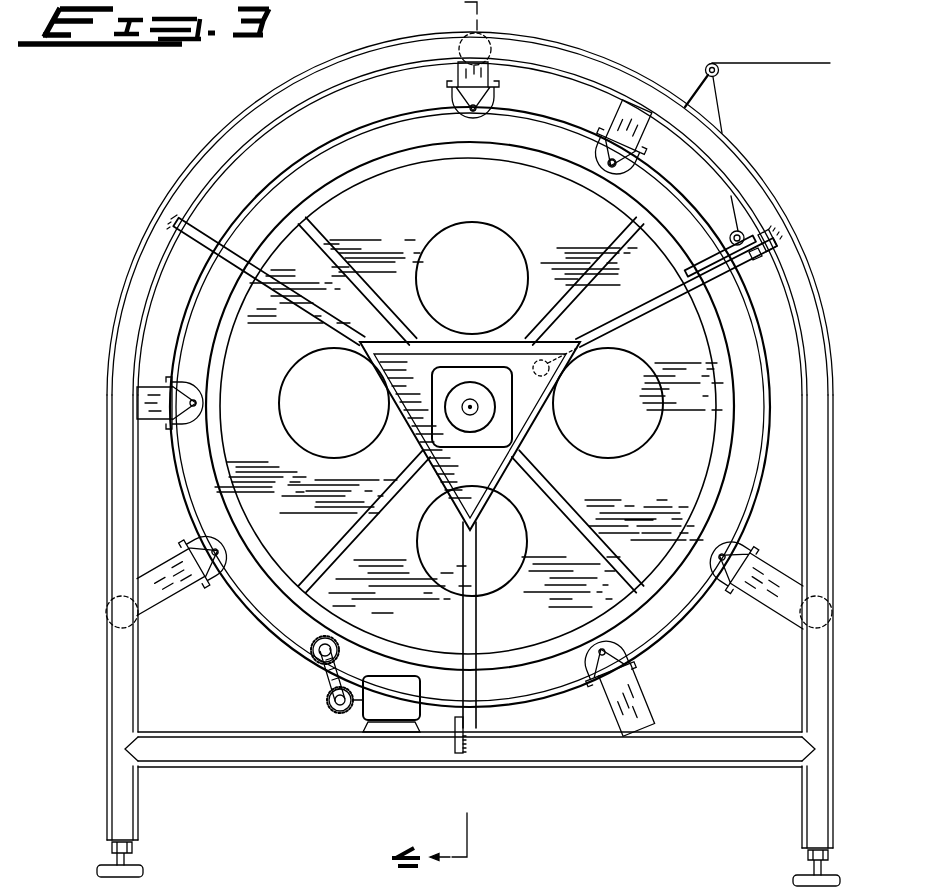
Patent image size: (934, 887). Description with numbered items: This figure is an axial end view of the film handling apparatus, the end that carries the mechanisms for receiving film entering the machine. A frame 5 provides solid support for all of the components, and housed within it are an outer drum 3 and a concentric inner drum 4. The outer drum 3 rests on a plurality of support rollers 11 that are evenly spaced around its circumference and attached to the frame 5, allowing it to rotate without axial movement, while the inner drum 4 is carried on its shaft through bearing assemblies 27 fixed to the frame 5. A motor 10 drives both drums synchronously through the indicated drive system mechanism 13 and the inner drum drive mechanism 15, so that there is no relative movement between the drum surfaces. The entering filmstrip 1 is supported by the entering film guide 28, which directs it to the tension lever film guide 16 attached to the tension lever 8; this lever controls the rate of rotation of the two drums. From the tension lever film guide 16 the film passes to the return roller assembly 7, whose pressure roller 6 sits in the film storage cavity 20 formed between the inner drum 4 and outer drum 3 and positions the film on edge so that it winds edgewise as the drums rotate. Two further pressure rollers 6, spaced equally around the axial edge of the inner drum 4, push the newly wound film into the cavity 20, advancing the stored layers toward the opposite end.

The entering filmstrip 1 is at (660, 170).
The outer drum 3 is at (567, 118).
The inner drum 4 is at (510, 173).
The frame 5 is at (524, 50).
The pressure roller 6 is at (200, 412).
The return roller assembly 7 is at (603, 180).
The tension lever 8 is at (688, 300).
The motor 10 is at (397, 712).
The support rollers 11 is at (467, 98).
The drive system mechanism 13 is at (324, 699).
The inner drum drive mechanism 15 is at (308, 660).
The tension lever film guide 16 is at (745, 236).
The film storage cavity 20 is at (748, 344).
The bearing assemblies 27 is at (503, 422).
The entering film guide 28 is at (710, 64).